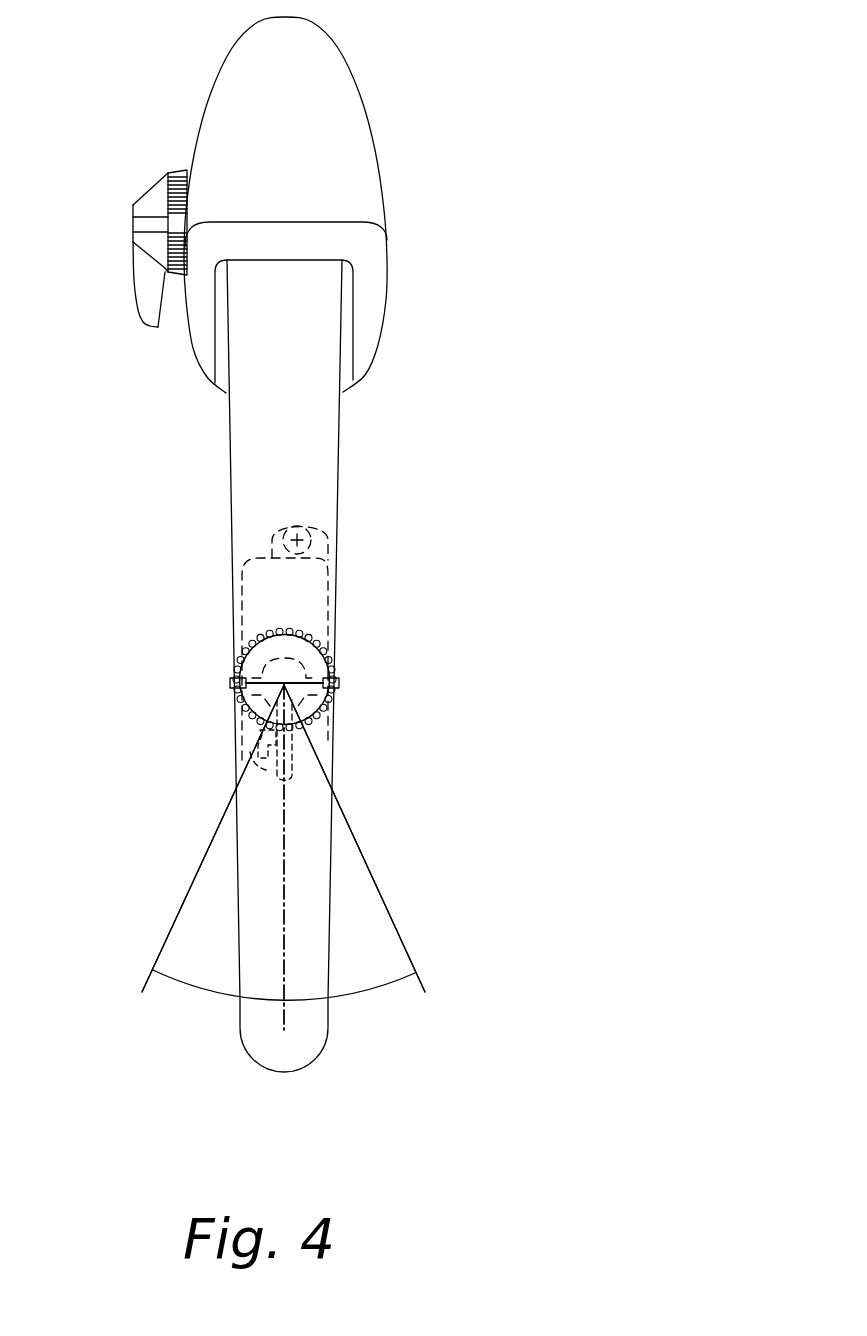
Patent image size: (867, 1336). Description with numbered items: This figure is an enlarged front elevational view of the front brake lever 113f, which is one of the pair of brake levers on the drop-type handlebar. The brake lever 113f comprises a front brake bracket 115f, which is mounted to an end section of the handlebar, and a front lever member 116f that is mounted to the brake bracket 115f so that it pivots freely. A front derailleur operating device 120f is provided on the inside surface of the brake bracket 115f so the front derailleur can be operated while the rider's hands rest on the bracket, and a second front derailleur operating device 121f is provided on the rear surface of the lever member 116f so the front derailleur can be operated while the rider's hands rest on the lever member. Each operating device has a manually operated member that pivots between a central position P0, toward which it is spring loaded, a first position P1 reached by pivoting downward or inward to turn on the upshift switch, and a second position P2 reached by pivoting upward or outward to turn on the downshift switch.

The front brake lever 113f is at (367, 618).
The front brake bracket 115f is at (377, 173).
The front lever member 116f is at (330, 497).
The front derailleur operating device 120f is at (140, 168).
The front derailleur operating device 121f is at (220, 690).
The central position P0 is at (284, 1010).
The first position P1 is at (201, 869).
The second position P2 is at (369, 869).